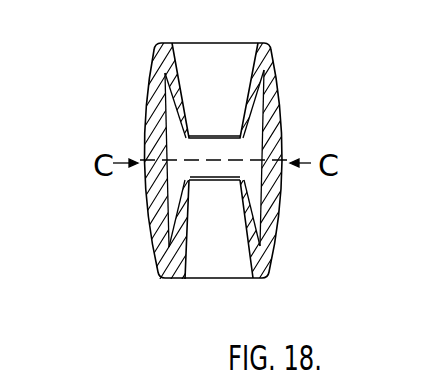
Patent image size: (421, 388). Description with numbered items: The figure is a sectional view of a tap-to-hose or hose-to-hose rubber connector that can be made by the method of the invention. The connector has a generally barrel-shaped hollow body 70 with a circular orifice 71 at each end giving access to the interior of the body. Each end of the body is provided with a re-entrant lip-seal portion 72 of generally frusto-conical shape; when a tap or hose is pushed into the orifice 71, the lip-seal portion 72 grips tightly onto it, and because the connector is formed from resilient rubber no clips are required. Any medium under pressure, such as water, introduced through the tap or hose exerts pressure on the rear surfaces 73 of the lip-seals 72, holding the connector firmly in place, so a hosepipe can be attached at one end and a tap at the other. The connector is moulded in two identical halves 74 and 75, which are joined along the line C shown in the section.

The hollow body 70 is at (153, 139).
The orifice 71 is at (222, 56).
The re-entrant lip-seal portion 72 is at (181, 100).
The rear surface of lip-seal 73 is at (254, 102).
The half of connector 74 is at (152, 230).
The half of connector 75 is at (282, 122).